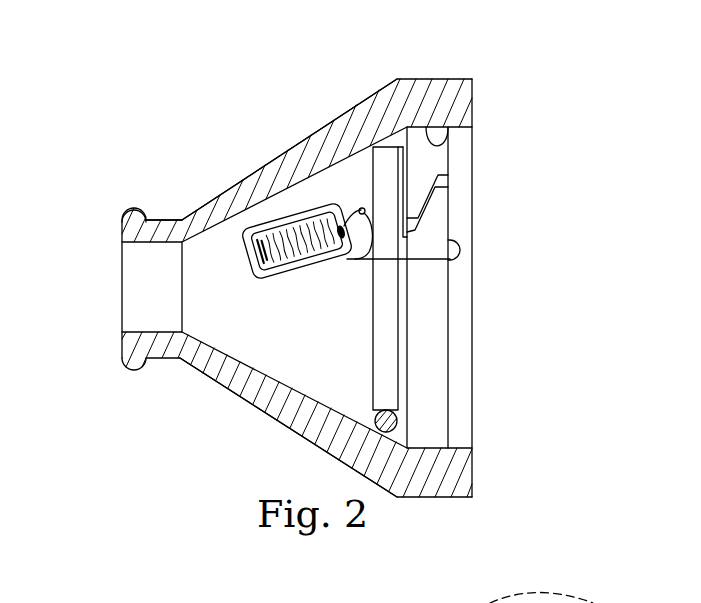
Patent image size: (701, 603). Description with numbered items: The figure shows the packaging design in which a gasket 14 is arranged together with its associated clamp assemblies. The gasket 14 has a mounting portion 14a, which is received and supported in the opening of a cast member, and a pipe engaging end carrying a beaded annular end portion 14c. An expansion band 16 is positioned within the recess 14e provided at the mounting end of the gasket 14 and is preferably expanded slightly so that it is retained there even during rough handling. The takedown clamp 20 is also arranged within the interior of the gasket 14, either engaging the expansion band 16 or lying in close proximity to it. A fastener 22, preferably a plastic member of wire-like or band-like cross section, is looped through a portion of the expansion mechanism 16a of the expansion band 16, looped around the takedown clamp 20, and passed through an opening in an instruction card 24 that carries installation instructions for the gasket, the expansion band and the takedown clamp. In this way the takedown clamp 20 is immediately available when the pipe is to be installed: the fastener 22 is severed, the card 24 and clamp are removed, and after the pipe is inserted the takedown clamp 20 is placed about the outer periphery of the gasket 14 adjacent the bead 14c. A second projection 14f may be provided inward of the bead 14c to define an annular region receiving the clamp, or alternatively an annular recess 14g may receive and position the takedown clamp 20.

The gasket 14 is at (317, 60).
The mounting portion 14a is at (472, 71).
The beaded annular end portion 14c is at (122, 210).
The recess 14e is at (450, 132).
The second projection 14f is at (230, 187).
The annular recess 14g is at (163, 220).
The expansion band 16 is at (449, 338).
The expansion mechanism 16a is at (420, 213).
The takedown clamp 20 is at (373, 345).
The fastener 22 is at (462, 259).
The instruction card 24 is at (258, 281).